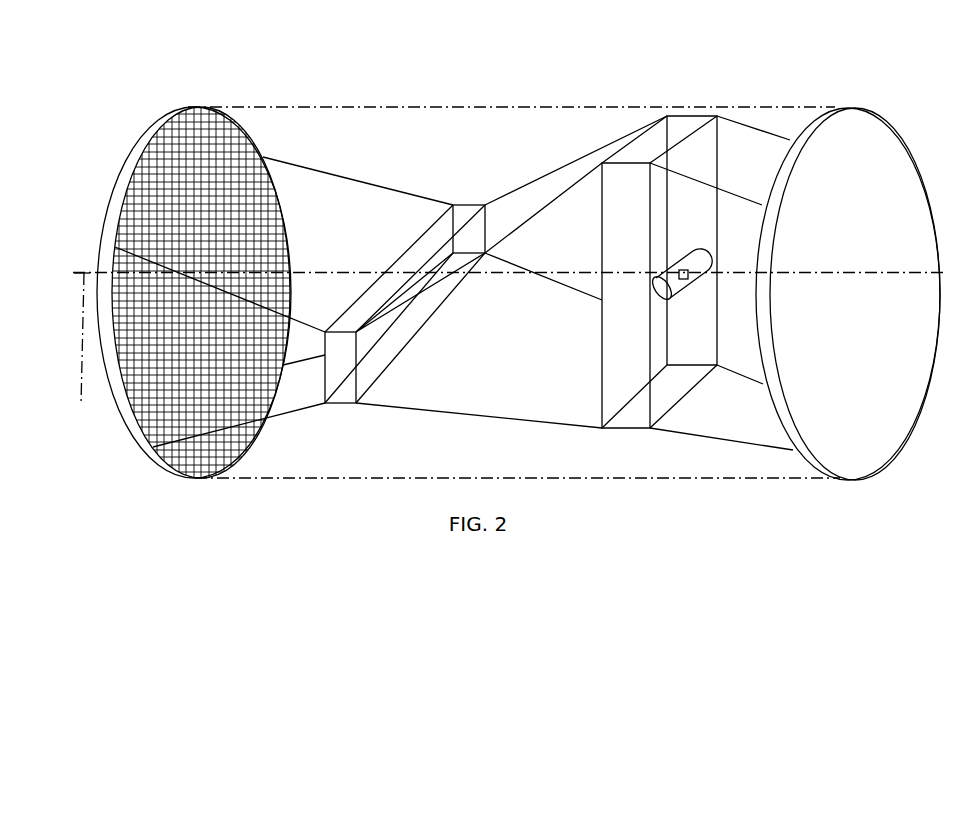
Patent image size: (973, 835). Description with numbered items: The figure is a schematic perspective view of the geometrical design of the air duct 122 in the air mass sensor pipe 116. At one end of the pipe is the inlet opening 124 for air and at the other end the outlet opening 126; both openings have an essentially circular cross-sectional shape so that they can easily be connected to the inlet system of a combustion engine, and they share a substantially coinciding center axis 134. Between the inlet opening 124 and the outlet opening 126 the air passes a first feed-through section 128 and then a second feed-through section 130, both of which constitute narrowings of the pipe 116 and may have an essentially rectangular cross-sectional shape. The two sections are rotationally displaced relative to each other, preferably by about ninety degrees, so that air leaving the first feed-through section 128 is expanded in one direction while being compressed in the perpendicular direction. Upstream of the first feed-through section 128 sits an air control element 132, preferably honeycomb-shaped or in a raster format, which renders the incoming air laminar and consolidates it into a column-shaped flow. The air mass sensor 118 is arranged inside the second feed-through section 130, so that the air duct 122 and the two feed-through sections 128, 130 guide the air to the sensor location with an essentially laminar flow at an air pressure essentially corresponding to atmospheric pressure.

The air mass sensor pipe 116 is at (293, 107).
The air mass sensor 118 is at (687, 270).
The air duct 122 is at (367, 210).
The inlet opening 124 is at (140, 148).
The outlet opening 126 is at (858, 122).
The first feed-through section 128 is at (453, 205).
The second feed-through section 130 is at (680, 112).
The air control element 132 is at (140, 188).
The center axis 134 is at (85, 350).